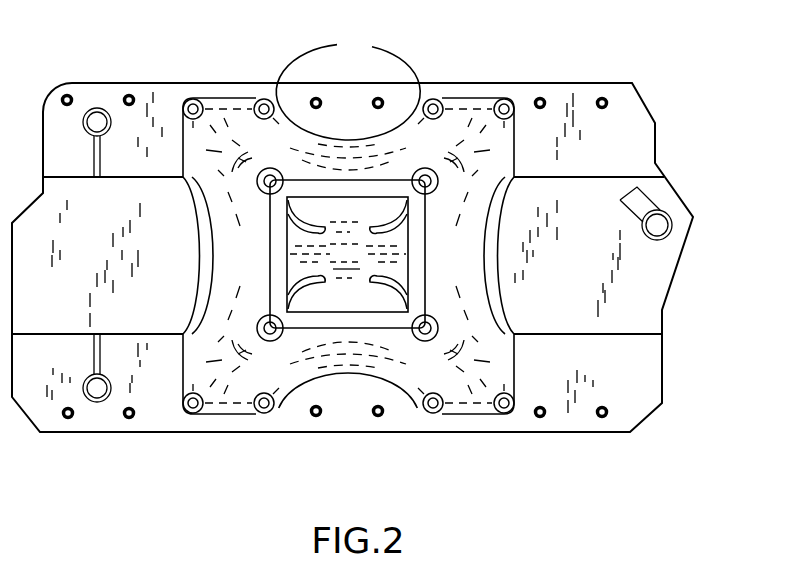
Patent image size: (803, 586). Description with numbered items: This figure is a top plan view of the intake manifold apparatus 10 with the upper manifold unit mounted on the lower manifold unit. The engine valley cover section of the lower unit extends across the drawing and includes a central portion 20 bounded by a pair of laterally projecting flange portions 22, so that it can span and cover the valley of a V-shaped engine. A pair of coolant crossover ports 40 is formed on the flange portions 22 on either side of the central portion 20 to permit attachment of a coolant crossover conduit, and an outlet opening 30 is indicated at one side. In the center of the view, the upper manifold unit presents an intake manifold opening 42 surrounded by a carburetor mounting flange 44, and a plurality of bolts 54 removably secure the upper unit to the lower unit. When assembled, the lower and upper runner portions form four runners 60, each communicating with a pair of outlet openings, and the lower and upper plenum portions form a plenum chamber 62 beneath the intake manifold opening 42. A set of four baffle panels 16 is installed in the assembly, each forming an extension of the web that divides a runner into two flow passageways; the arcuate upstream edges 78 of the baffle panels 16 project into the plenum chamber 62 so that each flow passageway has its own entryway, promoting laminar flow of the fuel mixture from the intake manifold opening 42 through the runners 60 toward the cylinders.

The intake manifold apparatus 10 is at (168, 462).
The baffle panels 16 is at (366, 208).
The central portion 20 is at (643, 283).
The flange portions 22 is at (632, 133).
The outlet openings 30 is at (657, 225).
The coolant crossover ports 40 is at (97, 108).
The intake manifold opening 42 is at (372, 328).
The carburetor mounting flange 44 is at (337, 322).
The bolts 54 is at (348, 88).
The runners 60 is at (227, 118).
The plenum chamber 62 is at (346, 250).
The upstream edges 78 is at (327, 286).